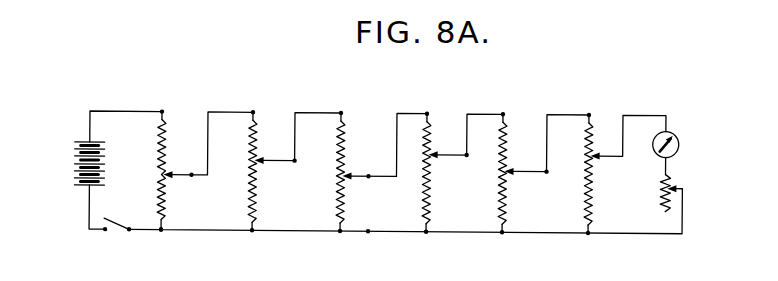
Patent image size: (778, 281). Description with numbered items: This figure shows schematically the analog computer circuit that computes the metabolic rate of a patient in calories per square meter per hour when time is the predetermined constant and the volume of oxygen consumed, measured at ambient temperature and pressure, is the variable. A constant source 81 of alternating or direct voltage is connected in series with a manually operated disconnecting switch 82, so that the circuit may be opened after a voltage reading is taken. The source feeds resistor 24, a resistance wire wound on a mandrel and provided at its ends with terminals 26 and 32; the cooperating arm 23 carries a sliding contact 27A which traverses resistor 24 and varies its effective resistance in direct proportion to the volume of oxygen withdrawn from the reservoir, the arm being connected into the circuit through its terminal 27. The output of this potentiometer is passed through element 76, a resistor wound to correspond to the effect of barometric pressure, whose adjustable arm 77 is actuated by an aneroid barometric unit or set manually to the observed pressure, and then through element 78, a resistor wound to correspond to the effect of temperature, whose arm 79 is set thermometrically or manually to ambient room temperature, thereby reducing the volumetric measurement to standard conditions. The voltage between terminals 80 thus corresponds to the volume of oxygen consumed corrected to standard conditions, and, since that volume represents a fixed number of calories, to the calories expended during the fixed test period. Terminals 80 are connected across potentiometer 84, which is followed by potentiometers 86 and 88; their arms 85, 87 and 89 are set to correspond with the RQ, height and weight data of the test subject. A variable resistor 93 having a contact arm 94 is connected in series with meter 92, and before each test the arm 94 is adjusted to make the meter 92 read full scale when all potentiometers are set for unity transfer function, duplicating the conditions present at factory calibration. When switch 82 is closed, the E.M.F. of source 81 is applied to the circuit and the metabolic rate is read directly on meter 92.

The constant source 81 is at (77, 152).
The disconnecting switch 82 is at (118, 233).
The terminal 26 is at (183, 152).
The arm 23 is at (182, 172).
The terminal 27 is at (192, 174).
The contact 27A is at (172, 177).
The resistor 24 is at (163, 211).
The terminal 32 is at (162, 229).
The resistor 76 is at (255, 207).
The adjustable arm 77 is at (266, 158).
The resistor 78 is at (345, 206).
The arm 79 is at (362, 171).
The terminals 80 is at (369, 229).
The potentiometer 84 is at (430, 207).
The arm 85 is at (448, 151).
The potentiometer 86 is at (507, 212).
The arm 87 is at (520, 167).
The potentiometer 88 is at (592, 209).
The arm 89 is at (613, 151).
The meter 92 is at (677, 128).
The variable resistor 93 is at (667, 170).
The contact arm 94 is at (681, 186).